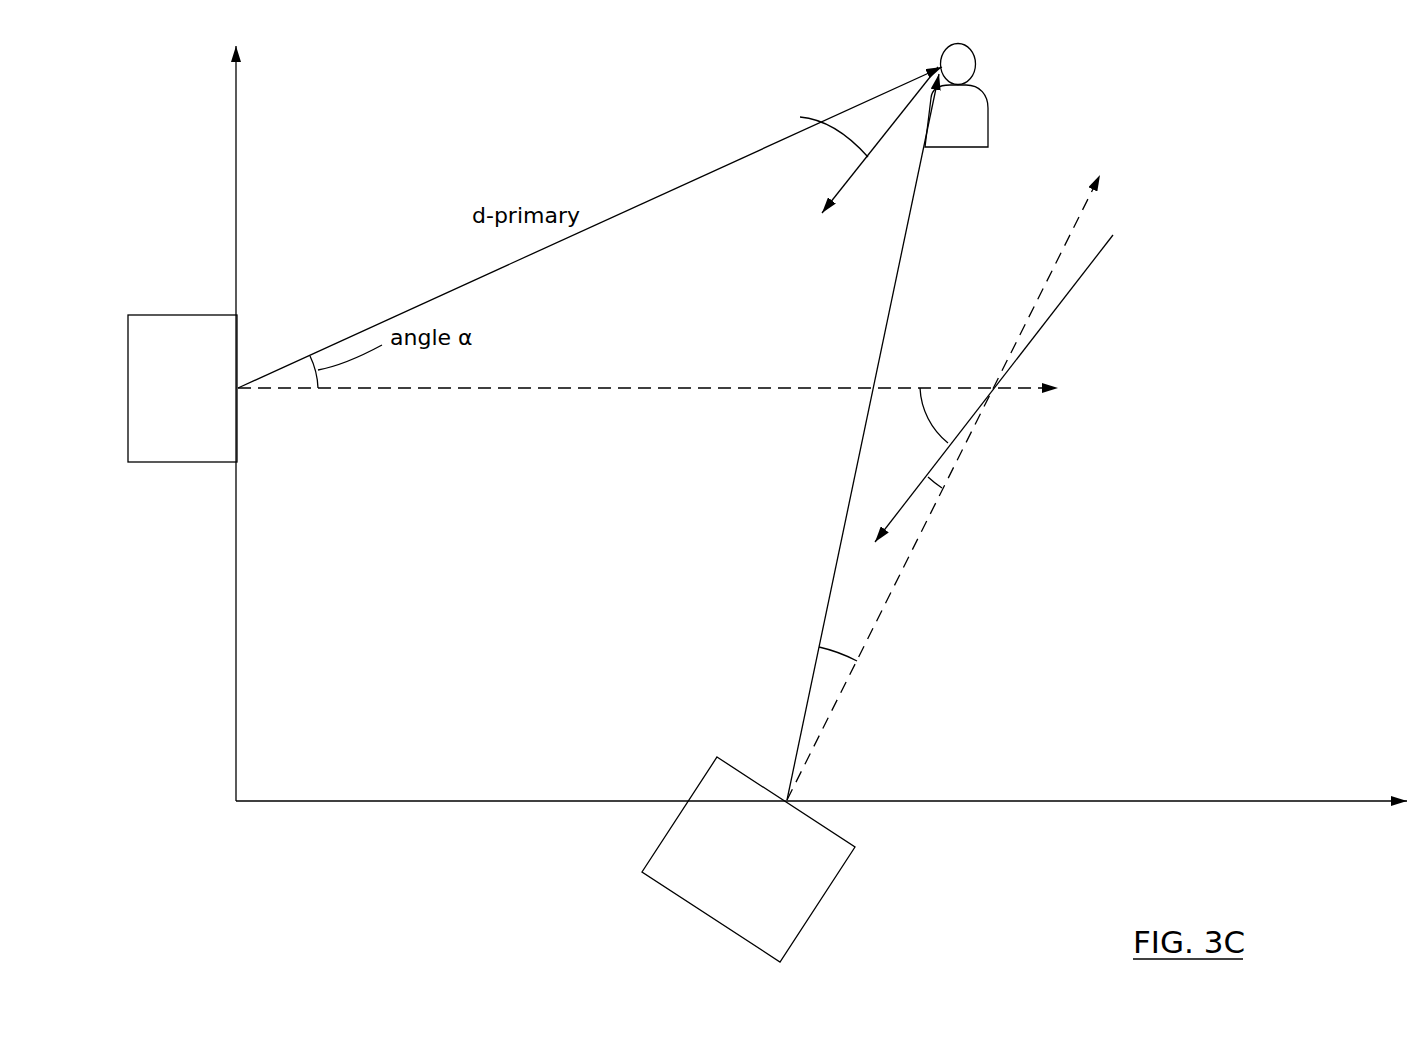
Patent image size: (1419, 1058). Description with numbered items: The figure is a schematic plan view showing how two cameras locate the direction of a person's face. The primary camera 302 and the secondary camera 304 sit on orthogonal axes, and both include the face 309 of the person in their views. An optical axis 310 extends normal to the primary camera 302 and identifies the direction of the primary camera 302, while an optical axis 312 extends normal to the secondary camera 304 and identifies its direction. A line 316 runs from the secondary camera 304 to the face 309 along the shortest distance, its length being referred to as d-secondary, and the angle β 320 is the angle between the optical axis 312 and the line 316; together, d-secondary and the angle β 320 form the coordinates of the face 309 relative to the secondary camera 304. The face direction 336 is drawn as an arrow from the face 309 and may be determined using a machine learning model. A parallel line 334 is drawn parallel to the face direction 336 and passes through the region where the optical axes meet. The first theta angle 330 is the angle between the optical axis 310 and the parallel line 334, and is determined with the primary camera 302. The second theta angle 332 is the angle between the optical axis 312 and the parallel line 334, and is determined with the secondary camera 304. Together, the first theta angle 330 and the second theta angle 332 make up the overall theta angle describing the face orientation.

The primary camera 302 is at (162, 428).
The secondary camera 304 is at (737, 905).
The face 309 is at (977, 60).
The optical axis 310 is at (597, 390).
The optical axis 312 is at (912, 552).
The line 316 is at (842, 540).
The angle β 320 is at (838, 653).
The angle θ1 330 is at (930, 425).
The angle θ2 332 is at (931, 484).
The parallel line 334 is at (1092, 267).
The face direction 336 is at (800, 117).